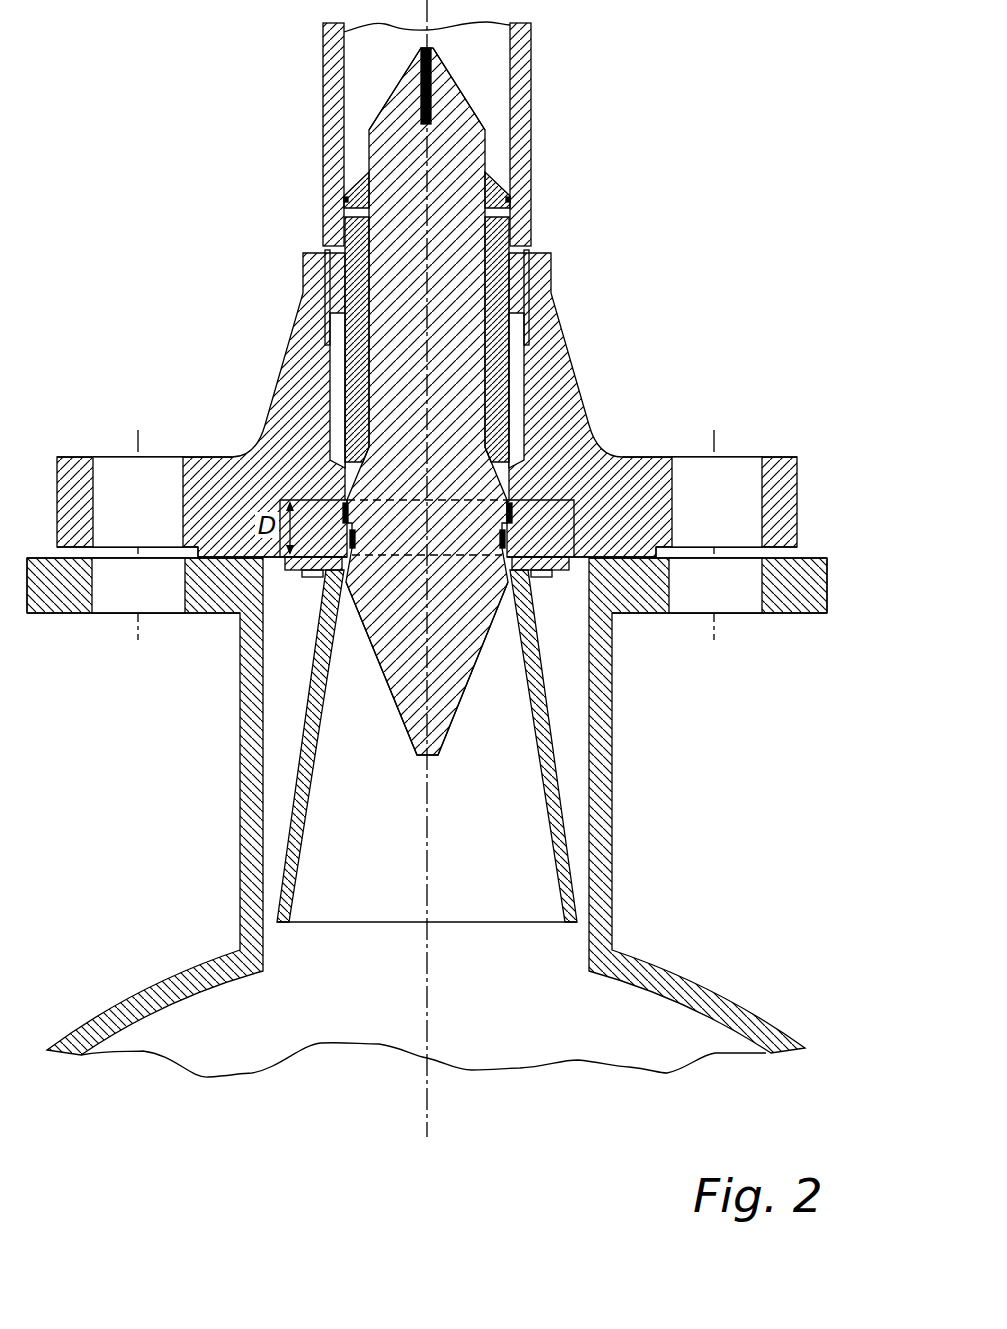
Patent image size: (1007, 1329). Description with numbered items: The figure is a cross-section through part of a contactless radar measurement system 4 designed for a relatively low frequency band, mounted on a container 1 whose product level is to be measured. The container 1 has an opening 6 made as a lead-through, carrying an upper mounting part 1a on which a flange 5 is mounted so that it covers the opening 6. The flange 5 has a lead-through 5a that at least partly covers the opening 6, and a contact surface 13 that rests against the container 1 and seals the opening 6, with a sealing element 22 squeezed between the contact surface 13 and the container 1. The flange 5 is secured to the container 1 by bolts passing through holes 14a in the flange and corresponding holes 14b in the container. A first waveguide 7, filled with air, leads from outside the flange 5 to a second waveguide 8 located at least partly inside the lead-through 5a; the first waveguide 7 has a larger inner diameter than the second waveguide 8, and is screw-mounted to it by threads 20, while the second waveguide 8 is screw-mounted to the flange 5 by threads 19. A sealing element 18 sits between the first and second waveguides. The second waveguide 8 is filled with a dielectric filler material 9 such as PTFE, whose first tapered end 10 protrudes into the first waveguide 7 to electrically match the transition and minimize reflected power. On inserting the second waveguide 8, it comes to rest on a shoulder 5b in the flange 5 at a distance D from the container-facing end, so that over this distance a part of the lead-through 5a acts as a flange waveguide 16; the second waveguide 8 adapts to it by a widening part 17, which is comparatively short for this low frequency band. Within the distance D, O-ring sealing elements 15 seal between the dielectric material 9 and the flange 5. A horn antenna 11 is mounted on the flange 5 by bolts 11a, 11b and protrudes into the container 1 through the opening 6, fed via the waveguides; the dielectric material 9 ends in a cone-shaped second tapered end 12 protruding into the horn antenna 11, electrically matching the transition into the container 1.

The container 1 is at (162, 941).
The upper mounting part 1a is at (793, 600).
The contactless radar measurement system 4 is at (597, 60).
The flange 5 is at (567, 380).
The lead-through 5a is at (340, 388).
The shoulder 5b is at (513, 470).
The opening 6 is at (350, 999).
The first waveguide 7 is at (517, 113).
The second waveguide 8 is at (507, 277).
The dielectric filler material 9 is at (460, 345).
The first tapered end 10 is at (400, 100).
The horn antenna 11 is at (563, 830).
The bolt 11a is at (310, 577).
The bolt 11b is at (547, 577).
The second tapered end 12 is at (467, 693).
The contact surface 13 is at (623, 548).
The holes 14a is at (158, 470).
The holes 14b is at (106, 613).
The sealing elements 15 is at (350, 514).
The flange waveguide 16 is at (522, 523).
The widening part 17 is at (312, 438).
The sealing element 18 is at (512, 201).
The threads 19 is at (323, 283).
The threads 20 is at (342, 232).
The sealing element 22 is at (230, 560).